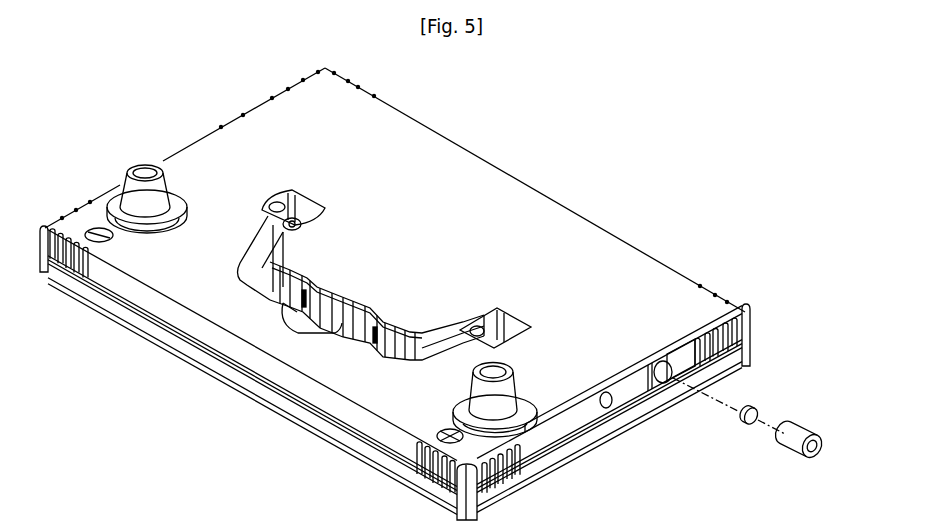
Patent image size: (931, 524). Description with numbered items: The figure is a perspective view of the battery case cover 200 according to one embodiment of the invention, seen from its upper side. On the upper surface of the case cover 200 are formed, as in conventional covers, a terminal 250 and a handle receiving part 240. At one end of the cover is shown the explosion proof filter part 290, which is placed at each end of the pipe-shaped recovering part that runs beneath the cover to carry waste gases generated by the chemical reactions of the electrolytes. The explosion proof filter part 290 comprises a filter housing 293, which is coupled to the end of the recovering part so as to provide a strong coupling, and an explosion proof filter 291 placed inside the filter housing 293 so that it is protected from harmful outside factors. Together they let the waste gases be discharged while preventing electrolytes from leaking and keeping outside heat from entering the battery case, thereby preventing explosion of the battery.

The battery case cover 200 is at (478, 208).
The handle receiving part 240 is at (253, 257).
The terminal 250 is at (145, 173).
The explosion proof filter part 290 is at (852, 352).
The explosion proof filter 291 is at (750, 407).
The filter housing 293 is at (803, 426).